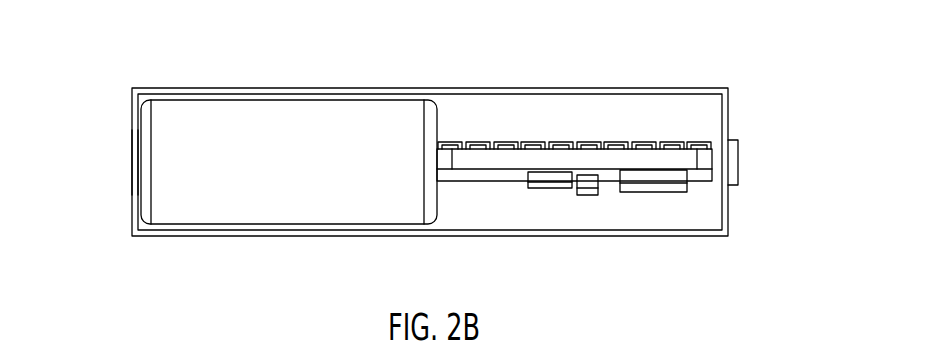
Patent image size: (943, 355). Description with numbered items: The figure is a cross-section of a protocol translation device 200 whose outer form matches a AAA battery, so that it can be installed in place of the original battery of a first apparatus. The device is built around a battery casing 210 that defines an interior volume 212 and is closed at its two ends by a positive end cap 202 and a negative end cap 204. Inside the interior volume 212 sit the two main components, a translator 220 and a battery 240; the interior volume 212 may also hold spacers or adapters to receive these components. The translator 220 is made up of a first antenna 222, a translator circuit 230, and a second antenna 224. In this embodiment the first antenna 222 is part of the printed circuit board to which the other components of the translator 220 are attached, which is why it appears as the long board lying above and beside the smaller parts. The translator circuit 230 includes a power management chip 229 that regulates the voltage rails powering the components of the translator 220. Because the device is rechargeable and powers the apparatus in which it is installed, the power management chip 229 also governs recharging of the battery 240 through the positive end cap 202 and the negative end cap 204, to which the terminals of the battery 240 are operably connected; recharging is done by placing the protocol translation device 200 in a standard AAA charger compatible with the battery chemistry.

The protocol translation device 200 is at (247, 53).
The positive end cap 202 is at (733, 165).
The negative end cap 204 is at (132, 162).
The battery casing 210 is at (307, 88).
The interior volume 212 is at (472, 117).
The translator 220 is at (645, 124).
The first antenna 222 is at (682, 158).
The second antenna 224 is at (587, 190).
The power management chip 229 is at (550, 183).
The translator circuit 230 is at (561, 140).
The battery 240 is at (280, 185).